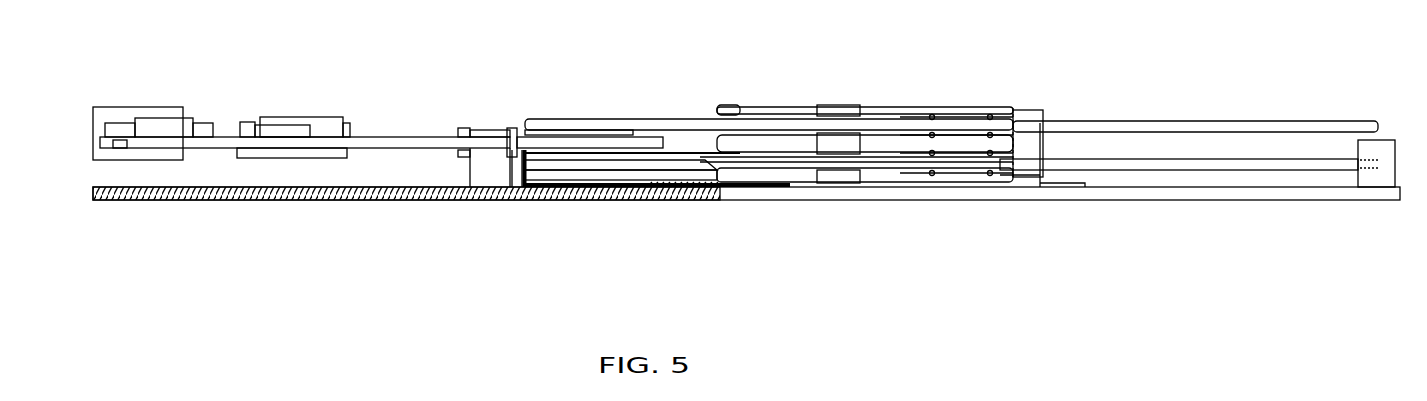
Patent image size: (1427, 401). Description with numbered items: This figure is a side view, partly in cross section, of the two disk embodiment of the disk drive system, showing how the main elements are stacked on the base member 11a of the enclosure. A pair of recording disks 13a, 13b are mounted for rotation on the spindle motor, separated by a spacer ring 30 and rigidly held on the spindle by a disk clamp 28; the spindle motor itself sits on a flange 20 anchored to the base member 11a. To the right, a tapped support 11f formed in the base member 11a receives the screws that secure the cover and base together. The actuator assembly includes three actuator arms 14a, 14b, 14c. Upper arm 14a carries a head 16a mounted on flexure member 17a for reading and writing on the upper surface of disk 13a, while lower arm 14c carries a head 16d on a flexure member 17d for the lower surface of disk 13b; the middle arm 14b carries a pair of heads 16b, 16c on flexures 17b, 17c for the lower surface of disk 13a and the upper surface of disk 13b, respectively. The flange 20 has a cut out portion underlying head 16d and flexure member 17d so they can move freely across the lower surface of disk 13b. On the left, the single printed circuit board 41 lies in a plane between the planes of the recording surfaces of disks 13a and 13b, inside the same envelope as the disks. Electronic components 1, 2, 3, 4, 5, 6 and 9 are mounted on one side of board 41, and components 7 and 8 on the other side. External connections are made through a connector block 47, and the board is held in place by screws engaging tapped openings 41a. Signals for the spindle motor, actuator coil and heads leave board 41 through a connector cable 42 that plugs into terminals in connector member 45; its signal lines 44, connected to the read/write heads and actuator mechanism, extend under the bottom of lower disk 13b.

The electronic component 1 is at (252, 122).
The electronic component 2 is at (465, 130).
The electronic component 3 is at (327, 117).
The electronic component 4 is at (213, 123).
The electronic component 5 is at (187, 118).
The electronic component 6 is at (523, 130).
The electronic component 7 is at (300, 158).
The electronic component 8 is at (522, 187).
The electronic component 9 is at (280, 125).
The base member 11a is at (1248, 197).
The tapped support 11f is at (1378, 150).
The disk 13a is at (1278, 127).
The disk 13b is at (1233, 162).
The actuator arm 14a is at (720, 173).
The actuator arm 14b is at (793, 143).
The actuator arm 14c is at (797, 180).
The head 16a is at (1010, 110).
The head 16b is at (1040, 113).
The head 16c is at (1067, 128).
The head 16d is at (1100, 128).
The flexure member 17a is at (932, 120).
The flexure member 17b is at (938, 140).
The flexure member 17c is at (990, 157).
The flexure member 17d is at (995, 178).
The flange 20 is at (1063, 185).
The disk clamp 28 is at (908, 108).
The spacer ring 30 is at (1040, 138).
The printed circuit board 41 is at (403, 145).
The tapped opening 41a is at (120, 148).
The connector cable 42 is at (580, 200).
The signal lines 44 is at (663, 202).
The connector member 45 is at (475, 157).
The connector block 47 is at (140, 107).